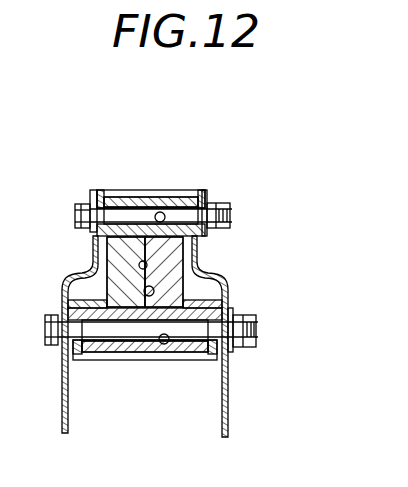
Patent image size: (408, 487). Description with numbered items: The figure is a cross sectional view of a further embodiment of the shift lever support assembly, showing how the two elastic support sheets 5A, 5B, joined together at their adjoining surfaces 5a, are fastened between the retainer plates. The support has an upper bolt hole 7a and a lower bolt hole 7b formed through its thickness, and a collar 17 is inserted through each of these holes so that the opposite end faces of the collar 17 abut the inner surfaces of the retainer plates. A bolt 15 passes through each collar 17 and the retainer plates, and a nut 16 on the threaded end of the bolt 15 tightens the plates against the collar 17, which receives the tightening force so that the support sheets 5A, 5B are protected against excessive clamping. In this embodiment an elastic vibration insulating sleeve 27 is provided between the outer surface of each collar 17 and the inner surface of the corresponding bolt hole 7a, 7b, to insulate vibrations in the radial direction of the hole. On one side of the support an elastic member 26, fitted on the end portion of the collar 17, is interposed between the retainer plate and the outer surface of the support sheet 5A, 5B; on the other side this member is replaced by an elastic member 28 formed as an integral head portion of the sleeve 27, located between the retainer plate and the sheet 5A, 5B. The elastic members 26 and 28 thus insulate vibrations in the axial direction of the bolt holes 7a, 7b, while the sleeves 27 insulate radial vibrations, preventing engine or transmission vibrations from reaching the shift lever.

The support sheet 5A is at (112, 257).
The support sheet 5B is at (180, 258).
The adjoining surface 5a is at (107, 285).
The upper bolt hole 7a is at (166, 196).
The lower bolt hole 7b is at (176, 344).
The bolt 15 is at (77, 208).
The nut 16 is at (214, 200).
The collar 17 is at (131, 199).
The elastic member 26 is at (99, 192).
The elastic vibration insulating sleeve 27 is at (140, 197).
The elastic member (head portion) 28 is at (190, 196).